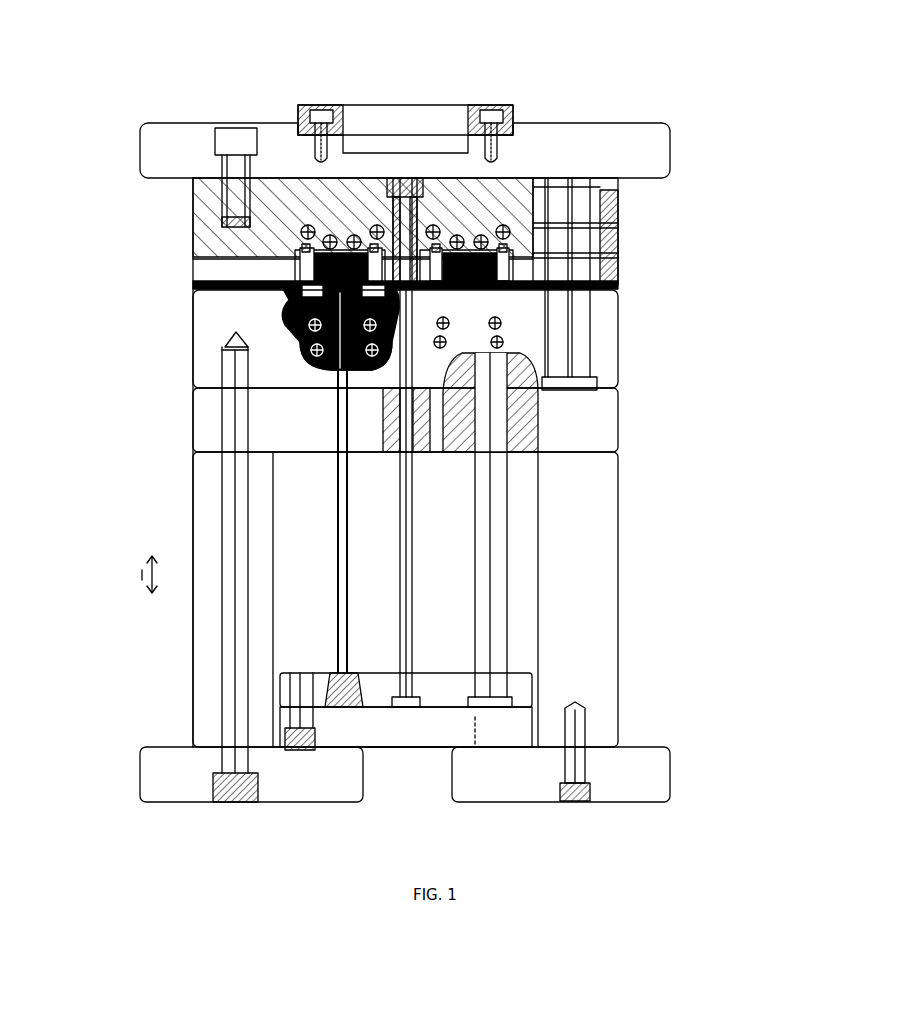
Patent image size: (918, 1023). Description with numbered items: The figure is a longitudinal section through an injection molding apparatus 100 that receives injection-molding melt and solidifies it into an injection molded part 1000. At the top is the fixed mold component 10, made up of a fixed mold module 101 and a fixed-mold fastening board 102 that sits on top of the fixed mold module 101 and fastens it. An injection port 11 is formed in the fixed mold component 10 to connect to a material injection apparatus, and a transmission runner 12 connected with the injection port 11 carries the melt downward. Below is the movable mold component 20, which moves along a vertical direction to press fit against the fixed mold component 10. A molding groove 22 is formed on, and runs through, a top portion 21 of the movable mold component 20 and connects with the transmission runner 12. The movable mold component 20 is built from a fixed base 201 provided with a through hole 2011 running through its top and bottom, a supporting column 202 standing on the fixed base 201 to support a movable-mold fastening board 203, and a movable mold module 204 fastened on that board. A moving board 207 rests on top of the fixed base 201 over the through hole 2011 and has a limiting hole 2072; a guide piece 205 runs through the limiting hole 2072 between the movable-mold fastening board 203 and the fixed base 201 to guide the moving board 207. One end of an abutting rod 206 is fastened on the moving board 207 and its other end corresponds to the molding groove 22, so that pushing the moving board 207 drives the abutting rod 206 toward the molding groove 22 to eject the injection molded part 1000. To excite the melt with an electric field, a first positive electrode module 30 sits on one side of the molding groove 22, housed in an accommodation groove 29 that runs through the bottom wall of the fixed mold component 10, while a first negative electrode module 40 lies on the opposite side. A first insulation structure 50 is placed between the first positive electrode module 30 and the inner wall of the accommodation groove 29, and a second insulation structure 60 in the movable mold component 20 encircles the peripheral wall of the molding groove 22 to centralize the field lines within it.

The injection molding apparatus 100 is at (388, 36).
The fixed mold component 10 is at (74, 132).
The fixed-mold fastening board 102 is at (157, 167).
The fixed mold module 101 is at (205, 217).
The injection port 11 is at (410, 117).
The transmission runner 12 is at (408, 174).
The first positive electrode module 30 is at (245, 228).
The accommodation groove 29 is at (622, 224).
The first insulation structure 50 is at (512, 258).
The second insulation structure 60 is at (560, 280).
The injection molded part 1000 is at (205, 282).
The top portion 21 is at (228, 288).
The molding groove 22 is at (303, 307).
The first negative electrode module 40 is at (307, 350).
The movable mold component 20 is at (720, 298).
The movable mold module 204 is at (605, 328).
The movable-mold fastening board 203 is at (600, 417).
The guide piece 205 is at (500, 528).
The supporting column 202 is at (552, 608).
The abutting rod 206 is at (345, 613).
The moving board 207 is at (517, 713).
The through hole 2011 is at (437, 780).
The limiting hole 2072 is at (432, 747).
The fixed base 201 is at (610, 773).